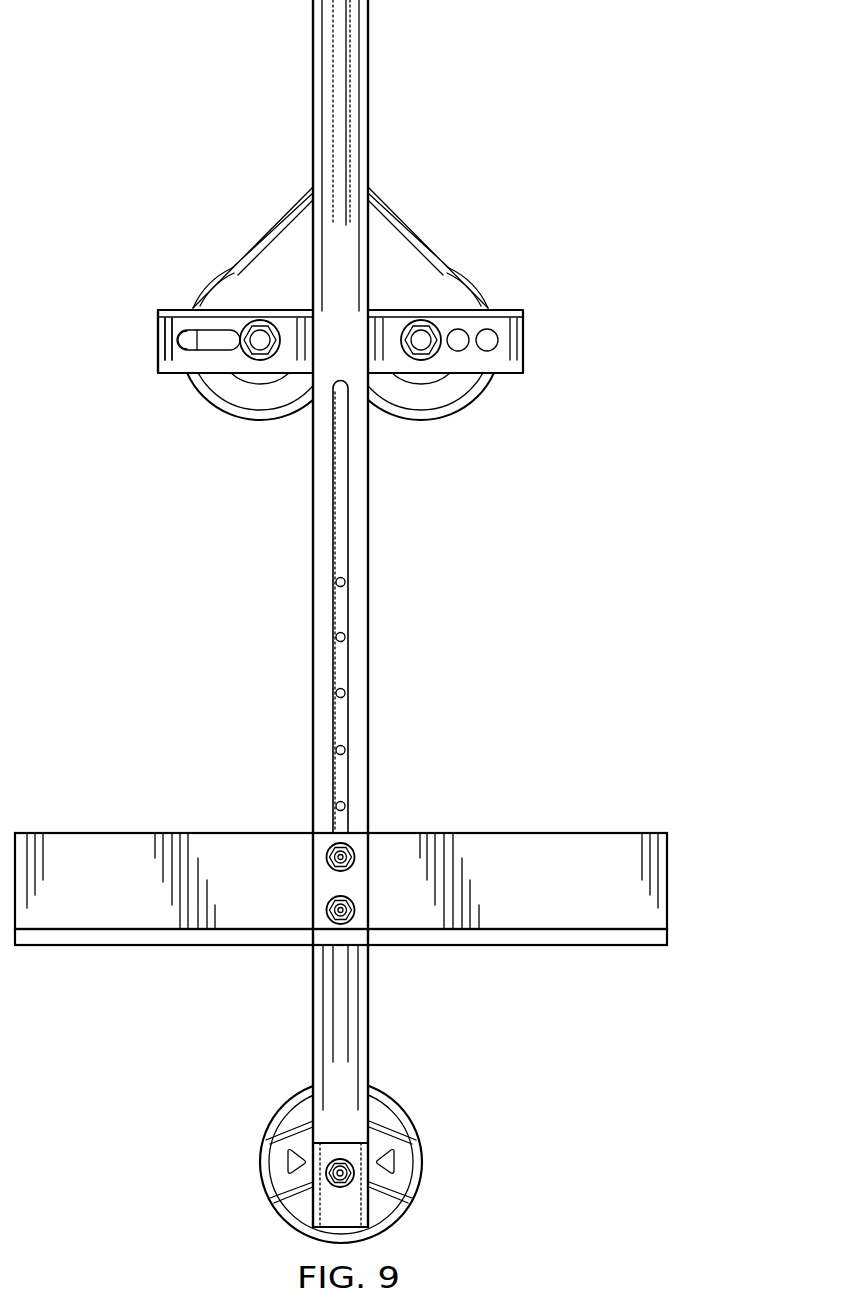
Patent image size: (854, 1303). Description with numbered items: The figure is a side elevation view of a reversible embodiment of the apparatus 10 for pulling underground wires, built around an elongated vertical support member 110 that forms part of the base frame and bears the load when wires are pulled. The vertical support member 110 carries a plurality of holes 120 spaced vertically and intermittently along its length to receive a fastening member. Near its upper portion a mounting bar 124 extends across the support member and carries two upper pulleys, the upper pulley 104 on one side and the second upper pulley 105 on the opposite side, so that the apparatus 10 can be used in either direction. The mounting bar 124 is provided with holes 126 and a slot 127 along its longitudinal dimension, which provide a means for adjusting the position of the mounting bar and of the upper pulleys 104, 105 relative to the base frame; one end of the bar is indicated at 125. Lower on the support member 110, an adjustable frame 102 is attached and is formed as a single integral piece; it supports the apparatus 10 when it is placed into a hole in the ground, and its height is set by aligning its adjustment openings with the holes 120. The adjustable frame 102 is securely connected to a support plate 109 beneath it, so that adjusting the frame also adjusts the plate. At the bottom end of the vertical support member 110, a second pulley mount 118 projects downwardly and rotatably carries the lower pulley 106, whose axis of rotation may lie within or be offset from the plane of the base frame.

The apparatus 10 is at (408, 101).
The vertical support member 110 is at (322, 50).
The holes 120 is at (346, 582).
The second upper pulley 105 is at (277, 408).
The upper pulley 104 is at (428, 408).
The mounting bar 124 is at (505, 340).
The axle bracket end 125 is at (166, 340).
The holes 126 is at (489, 345).
The slot 127 is at (207, 347).
The adjustable frame 102 is at (667, 862).
The support plate 109 is at (652, 938).
The lower pulley 106 is at (423, 1157).
The second pulley mount 118 is at (347, 1205).